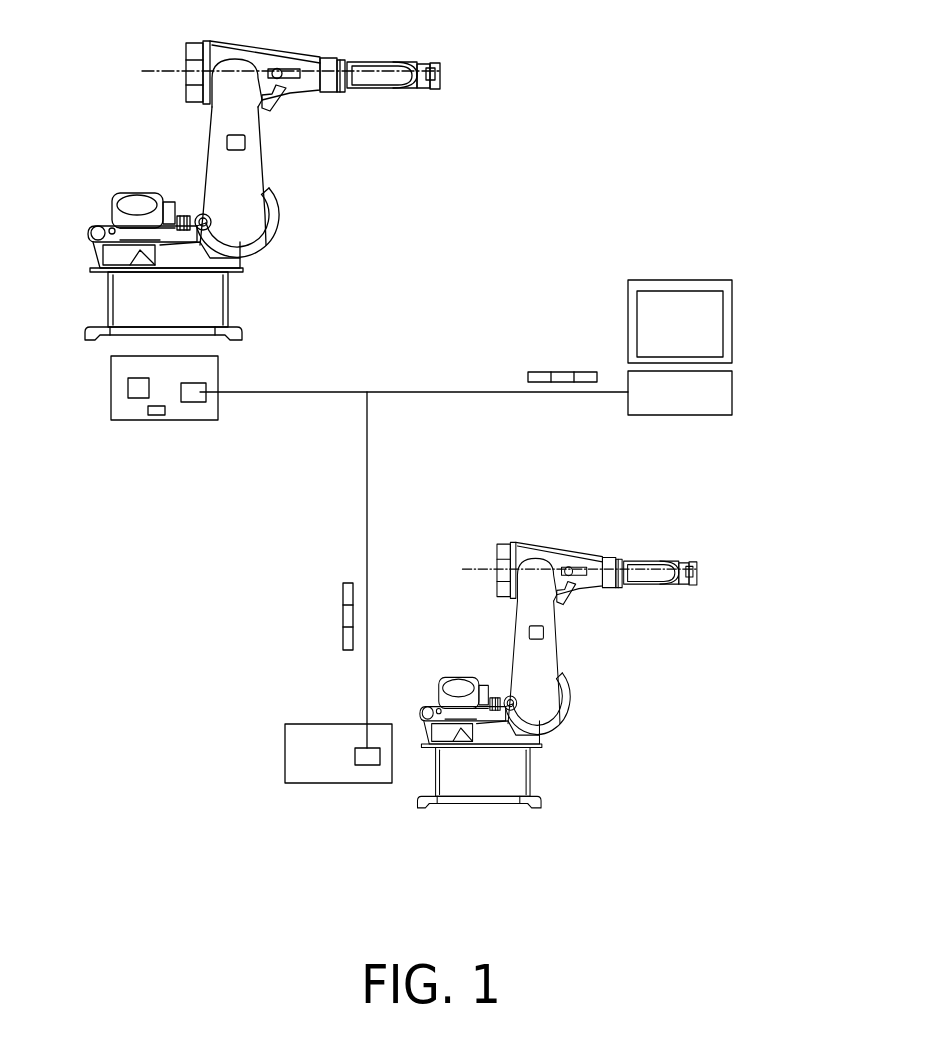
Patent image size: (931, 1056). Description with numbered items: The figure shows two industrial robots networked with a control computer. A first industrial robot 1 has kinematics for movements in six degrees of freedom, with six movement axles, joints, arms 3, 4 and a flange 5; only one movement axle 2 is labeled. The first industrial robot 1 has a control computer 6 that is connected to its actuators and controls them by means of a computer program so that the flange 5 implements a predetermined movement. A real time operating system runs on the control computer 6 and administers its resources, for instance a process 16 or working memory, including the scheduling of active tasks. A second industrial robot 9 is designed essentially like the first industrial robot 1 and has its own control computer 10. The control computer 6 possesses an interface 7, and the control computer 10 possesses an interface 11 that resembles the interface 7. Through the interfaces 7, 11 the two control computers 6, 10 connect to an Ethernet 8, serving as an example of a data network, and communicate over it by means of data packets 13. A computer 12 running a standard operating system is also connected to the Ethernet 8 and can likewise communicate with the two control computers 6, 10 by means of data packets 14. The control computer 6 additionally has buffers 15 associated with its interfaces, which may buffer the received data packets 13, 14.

The first industrial robot 1 is at (277, 181).
The movement axle 2 is at (152, 71).
The arm 3 is at (289, 90).
The arm 4 is at (253, 176).
The flange 5 is at (437, 63).
The control computer 6 is at (201, 370).
The interface 7 is at (191, 398).
The Ethernet 8 is at (367, 427).
The second industrial robot 9 is at (553, 630).
The control computer 10 is at (297, 753).
The interface 11 is at (370, 765).
The computer 12 is at (720, 393).
The data packets 13 is at (348, 617).
The data packets 14 is at (561, 372).
The buffers 15 is at (155, 416).
The process 16 is at (128, 390).